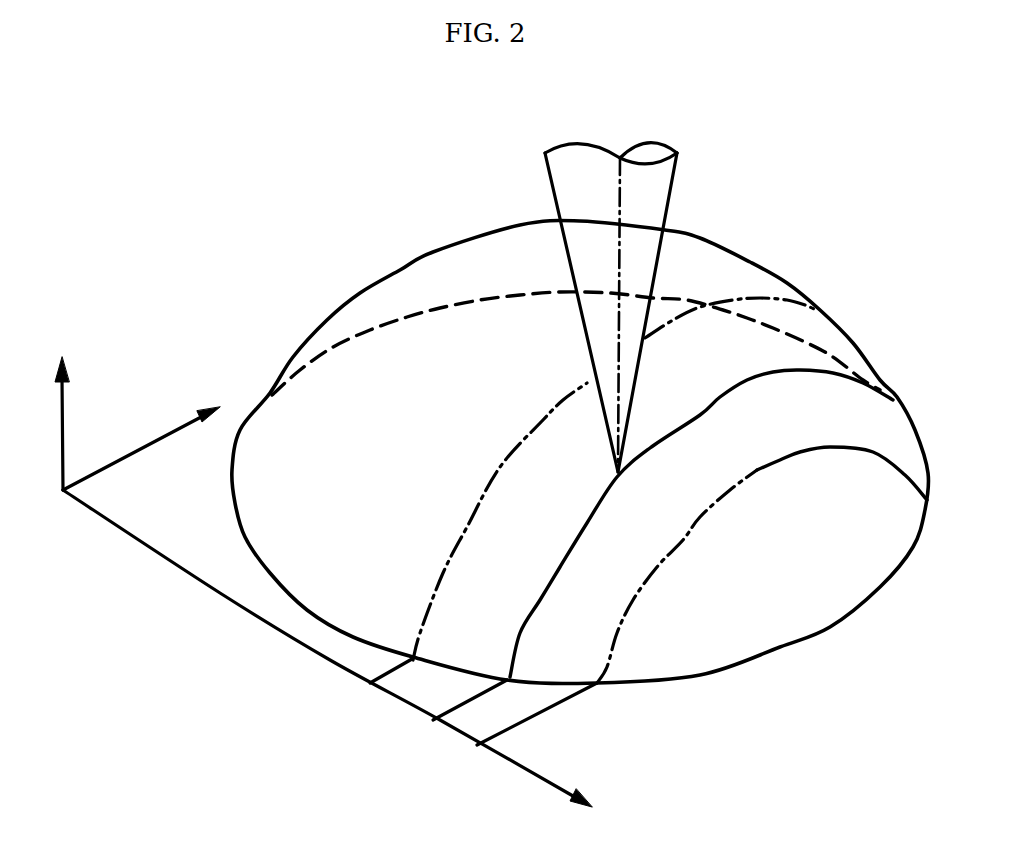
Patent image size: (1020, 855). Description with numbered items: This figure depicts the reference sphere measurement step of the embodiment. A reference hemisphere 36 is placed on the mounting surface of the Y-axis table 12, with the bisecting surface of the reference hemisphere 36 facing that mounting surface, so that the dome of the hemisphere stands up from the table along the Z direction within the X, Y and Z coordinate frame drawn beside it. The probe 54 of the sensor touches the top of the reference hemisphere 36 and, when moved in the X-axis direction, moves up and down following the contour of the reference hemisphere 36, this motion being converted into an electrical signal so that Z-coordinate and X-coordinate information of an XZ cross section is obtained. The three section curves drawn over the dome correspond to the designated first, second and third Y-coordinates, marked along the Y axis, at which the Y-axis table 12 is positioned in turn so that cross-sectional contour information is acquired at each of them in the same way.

The Y-axis table 12 is at (140, 497).
The reference hemisphere 36 is at (433, 250).
The probe 54 is at (663, 185).